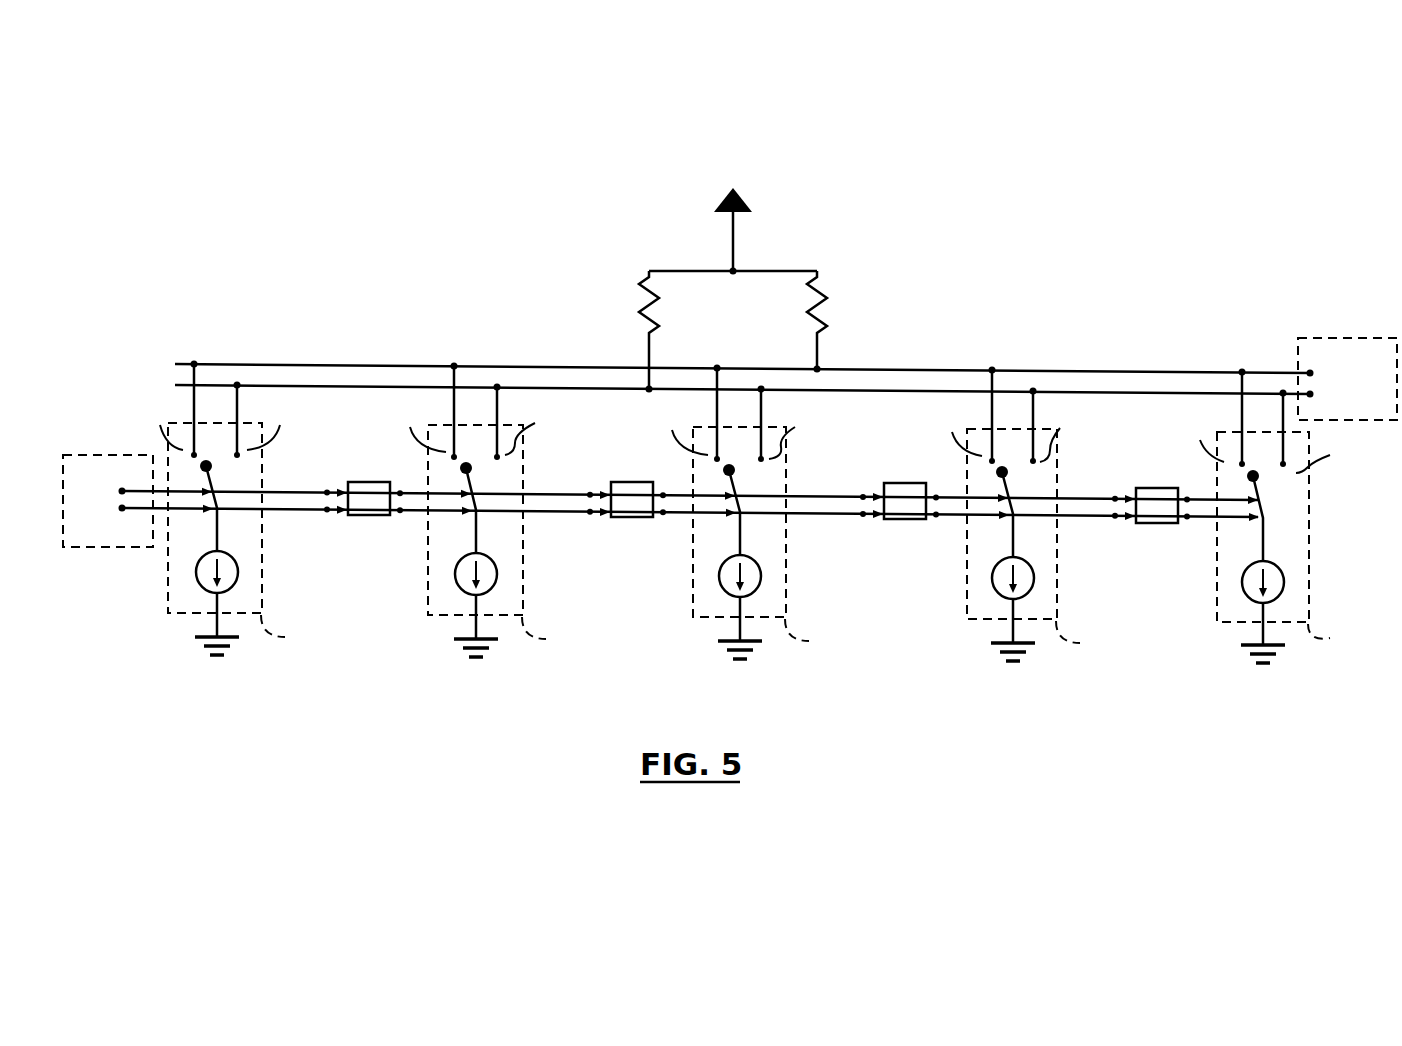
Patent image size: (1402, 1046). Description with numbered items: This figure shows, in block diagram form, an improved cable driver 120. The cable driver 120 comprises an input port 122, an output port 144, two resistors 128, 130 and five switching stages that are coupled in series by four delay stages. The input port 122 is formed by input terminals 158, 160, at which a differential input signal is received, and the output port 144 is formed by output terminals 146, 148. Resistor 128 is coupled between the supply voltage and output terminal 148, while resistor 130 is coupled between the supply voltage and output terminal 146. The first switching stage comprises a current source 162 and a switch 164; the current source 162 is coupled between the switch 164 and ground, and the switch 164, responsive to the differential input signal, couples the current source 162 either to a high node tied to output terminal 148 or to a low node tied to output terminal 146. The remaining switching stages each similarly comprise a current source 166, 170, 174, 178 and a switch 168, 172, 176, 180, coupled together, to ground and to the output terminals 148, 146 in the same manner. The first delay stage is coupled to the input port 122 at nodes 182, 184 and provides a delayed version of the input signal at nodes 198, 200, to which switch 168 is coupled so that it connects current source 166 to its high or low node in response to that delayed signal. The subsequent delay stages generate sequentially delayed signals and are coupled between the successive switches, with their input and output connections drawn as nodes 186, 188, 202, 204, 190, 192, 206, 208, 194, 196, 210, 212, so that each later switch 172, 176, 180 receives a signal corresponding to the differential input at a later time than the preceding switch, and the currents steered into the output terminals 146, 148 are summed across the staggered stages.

The improved cable driver 120 is at (1032, 263).
The input port 122 is at (132, 555).
The resistor 128 is at (820, 330).
The resistor 130 is at (652, 330).
The output port 144 is at (1341, 330).
The output terminal 146 is at (1313, 395).
The output terminal 148 is at (1313, 372).
The input terminal 158 is at (108, 490).
The input terminal 160 is at (117, 513).
The current source 162 is at (238, 570).
The switch 164 is at (217, 483).
The current source 166 is at (497, 572).
The switch 168 is at (480, 484).
The current source 170 is at (761, 578).
The switch 172 is at (742, 484).
The current source 174 is at (1034, 580).
The switch 176 is at (1017, 485).
The current source 178 is at (1284, 574).
The switch 180 is at (1270, 496).
The node 182 is at (323, 488).
The node 184 is at (323, 513).
The signal line 186 is at (597, 492).
The signal line 188 is at (590, 513).
The signal line 190 is at (862, 490).
The signal line 192 is at (862, 516).
The signal line 194 is at (1120, 486).
The signal line 196 is at (1112, 522).
The node 198 is at (397, 492).
The node 200 is at (397, 512).
The delayed signal line 202 is at (662, 492).
The delayed signal line 204 is at (680, 540).
The delayed signal line 206 is at (943, 488).
The delayed signal line 208 is at (945, 527).
The delayed signal line 210 is at (1187, 498).
The delayed signal line 212 is at (1187, 523).